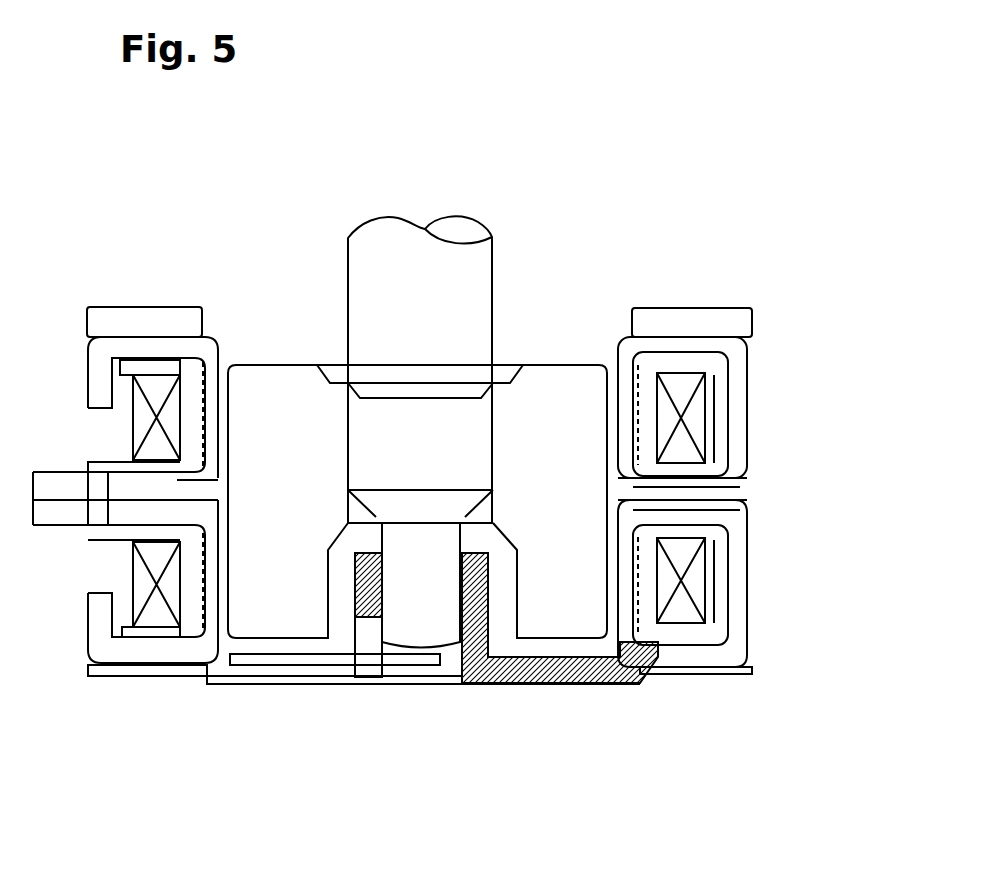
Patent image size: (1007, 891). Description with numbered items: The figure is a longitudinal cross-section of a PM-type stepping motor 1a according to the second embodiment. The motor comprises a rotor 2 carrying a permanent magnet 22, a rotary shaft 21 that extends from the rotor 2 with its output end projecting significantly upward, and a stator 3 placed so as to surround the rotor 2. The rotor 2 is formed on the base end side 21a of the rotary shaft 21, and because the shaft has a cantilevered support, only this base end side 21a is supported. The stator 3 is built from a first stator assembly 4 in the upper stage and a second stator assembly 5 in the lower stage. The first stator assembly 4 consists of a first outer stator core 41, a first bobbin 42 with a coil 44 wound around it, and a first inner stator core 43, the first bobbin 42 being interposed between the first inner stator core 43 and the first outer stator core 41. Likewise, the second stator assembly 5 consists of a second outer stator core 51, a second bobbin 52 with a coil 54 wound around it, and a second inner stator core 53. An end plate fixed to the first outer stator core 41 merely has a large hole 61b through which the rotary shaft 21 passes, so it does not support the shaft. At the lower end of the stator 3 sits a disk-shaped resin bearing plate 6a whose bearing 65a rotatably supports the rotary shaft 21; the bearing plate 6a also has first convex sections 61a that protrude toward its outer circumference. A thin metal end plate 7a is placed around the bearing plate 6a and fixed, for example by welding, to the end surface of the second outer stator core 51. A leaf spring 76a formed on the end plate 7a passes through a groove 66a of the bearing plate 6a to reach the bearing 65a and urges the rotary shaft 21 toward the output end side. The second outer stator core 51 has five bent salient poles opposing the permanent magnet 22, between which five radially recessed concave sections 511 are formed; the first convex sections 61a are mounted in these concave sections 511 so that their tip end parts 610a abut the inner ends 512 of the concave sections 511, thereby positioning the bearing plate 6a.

The stepping motor 1a is at (753, 111).
The rotor 2 is at (331, 403).
The rotary shaft 21 is at (383, 302).
The base end side 21a is at (282, 622).
The permanent magnet 22 is at (532, 408).
The stator 3 is at (904, 360).
The first stator assembly 4 is at (852, 327).
The first outer stator core 41 is at (738, 362).
The first bobbin 42 is at (678, 428).
The first inner stator core 43 is at (713, 487).
The coil 44 is at (682, 393).
The second stator assembly 5 is at (852, 485).
The second outer stator core 51 is at (737, 627).
The second bobbin 52 is at (703, 557).
The second inner stator core 53 is at (715, 517).
The coil 54 is at (692, 587).
The concave sections 511 is at (732, 702).
The inner ends 512 is at (660, 647).
The bearing plate 6a is at (697, 327).
The first convex sections 61a is at (623, 682).
The large hole 61b is at (630, 313).
The tip end parts 610a is at (638, 682).
The bearing 65a is at (493, 580).
The groove 66a is at (340, 677).
The leaf spring 76a is at (320, 663).
The end plate 7a is at (750, 673).